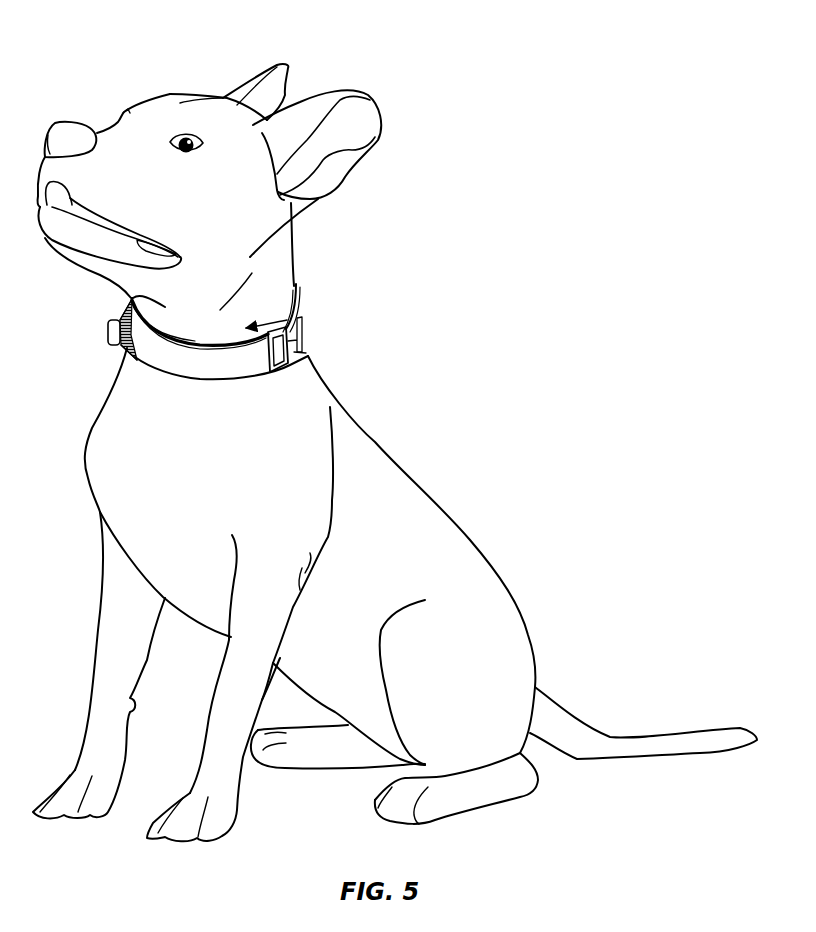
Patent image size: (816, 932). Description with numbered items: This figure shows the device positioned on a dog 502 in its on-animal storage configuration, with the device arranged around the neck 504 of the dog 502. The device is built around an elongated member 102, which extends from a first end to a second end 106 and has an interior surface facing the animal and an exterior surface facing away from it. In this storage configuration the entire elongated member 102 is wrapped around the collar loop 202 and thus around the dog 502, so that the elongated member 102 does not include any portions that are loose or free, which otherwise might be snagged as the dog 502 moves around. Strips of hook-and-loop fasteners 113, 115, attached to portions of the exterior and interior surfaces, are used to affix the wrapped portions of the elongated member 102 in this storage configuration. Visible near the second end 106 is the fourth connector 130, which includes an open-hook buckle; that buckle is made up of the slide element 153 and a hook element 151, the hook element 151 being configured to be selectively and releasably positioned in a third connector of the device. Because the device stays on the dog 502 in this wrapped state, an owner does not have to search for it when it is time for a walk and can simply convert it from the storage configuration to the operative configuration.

The dog 502 is at (102, 50).
The elongated member 102 is at (218, 367).
The second end 106 is at (105, 334).
The strip of hook-and-loop fastener 113 is at (103, 311).
The strip of hook-and-loop fastener 115 is at (127, 349).
The collar loop 202 is at (170, 357).
The fourth connector 130 is at (304, 338).
The hook element 151 is at (301, 352).
The slide element 153 is at (302, 320).
The neck 504 is at (300, 305).